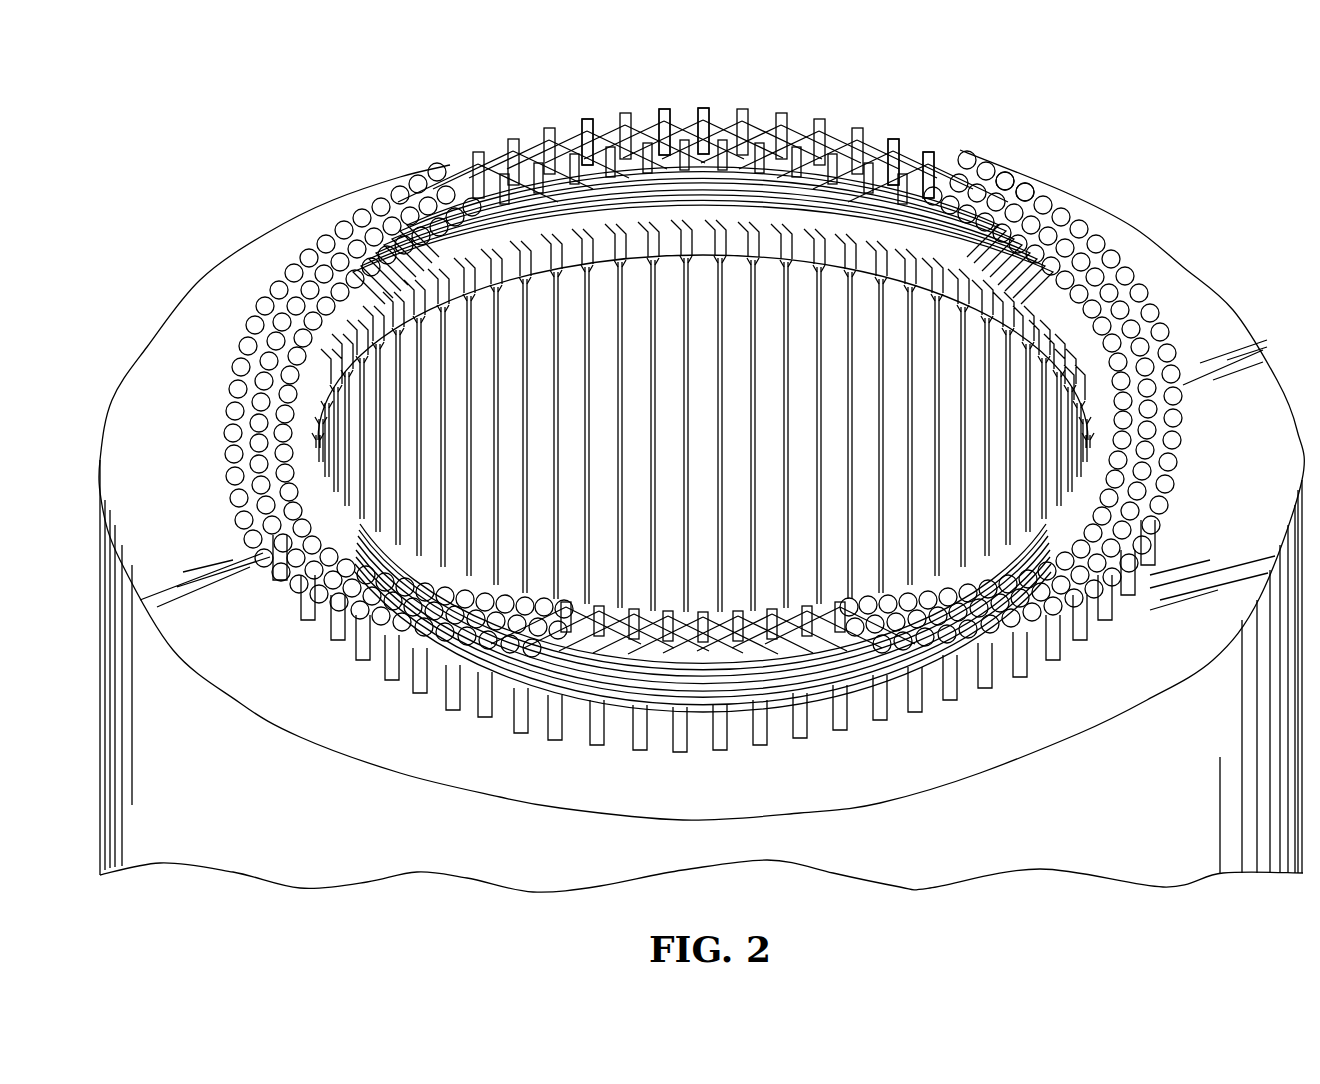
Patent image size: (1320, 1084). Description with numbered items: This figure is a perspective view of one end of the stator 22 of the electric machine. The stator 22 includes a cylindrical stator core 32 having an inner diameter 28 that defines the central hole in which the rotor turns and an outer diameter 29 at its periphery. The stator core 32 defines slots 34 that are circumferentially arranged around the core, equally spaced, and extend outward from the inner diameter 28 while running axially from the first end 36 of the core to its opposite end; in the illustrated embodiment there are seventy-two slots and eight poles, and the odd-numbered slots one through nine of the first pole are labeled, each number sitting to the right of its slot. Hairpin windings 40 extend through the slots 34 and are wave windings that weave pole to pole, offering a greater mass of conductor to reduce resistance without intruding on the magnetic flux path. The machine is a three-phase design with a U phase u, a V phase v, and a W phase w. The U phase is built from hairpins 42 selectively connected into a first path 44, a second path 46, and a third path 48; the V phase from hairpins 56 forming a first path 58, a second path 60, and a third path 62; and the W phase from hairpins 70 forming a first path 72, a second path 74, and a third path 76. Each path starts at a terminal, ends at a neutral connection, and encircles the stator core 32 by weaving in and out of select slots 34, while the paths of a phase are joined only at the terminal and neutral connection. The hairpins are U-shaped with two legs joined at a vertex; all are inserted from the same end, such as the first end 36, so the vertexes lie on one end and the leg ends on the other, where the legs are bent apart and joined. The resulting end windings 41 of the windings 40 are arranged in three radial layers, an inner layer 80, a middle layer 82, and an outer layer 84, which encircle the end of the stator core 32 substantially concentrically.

The stator 22 is at (1118, 134).
The inner diameter 28 is at (572, 387).
The outer diameter 29 is at (263, 833).
The stator core 32 is at (1205, 283).
The slots 34 is at (483, 717).
The first end 36 is at (1210, 340).
The hairpin windings 40 is at (237, 333).
The end windings 41 is at (810, 663).
The hairpins 42 is at (470, 232).
The first path 44 is at (433, 228).
The second path 46 is at (483, 222).
The third path 48 is at (545, 212).
The hairpins 56 is at (707, 200).
The first path 58 is at (527, 207).
The second path 60 is at (610, 200).
The third path 62 is at (657, 207).
The hairpins 70 is at (757, 200).
The first path 72 is at (797, 223).
The second path 74 is at (833, 223).
The third path 76 is at (905, 237).
The inner layer 80 is at (477, 623).
The middle layer 82 is at (610, 643).
The outer layer 84 is at (743, 647).
The U phase u is at (525, 223).
The V phase v is at (553, 207).
The W phase w is at (870, 225).